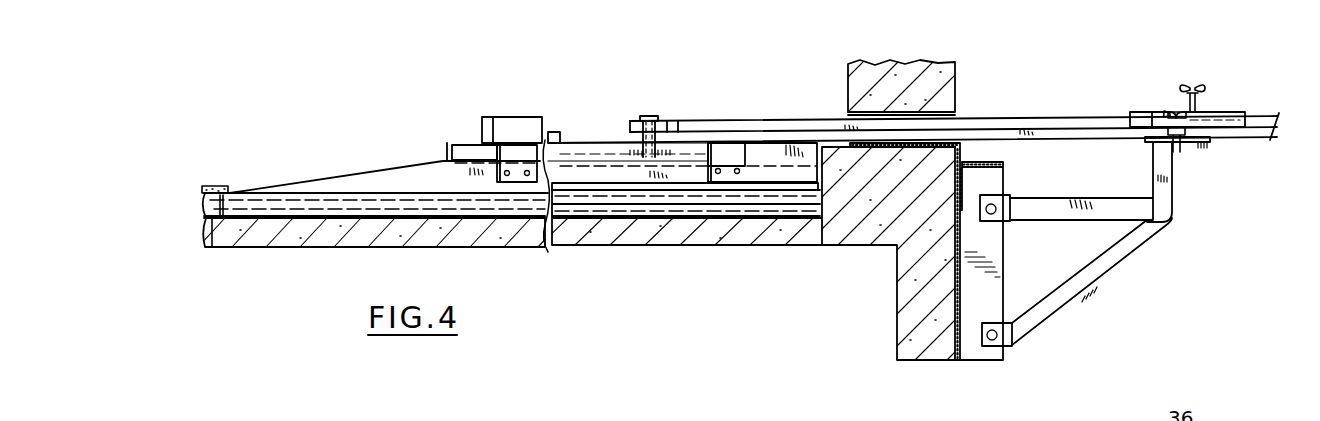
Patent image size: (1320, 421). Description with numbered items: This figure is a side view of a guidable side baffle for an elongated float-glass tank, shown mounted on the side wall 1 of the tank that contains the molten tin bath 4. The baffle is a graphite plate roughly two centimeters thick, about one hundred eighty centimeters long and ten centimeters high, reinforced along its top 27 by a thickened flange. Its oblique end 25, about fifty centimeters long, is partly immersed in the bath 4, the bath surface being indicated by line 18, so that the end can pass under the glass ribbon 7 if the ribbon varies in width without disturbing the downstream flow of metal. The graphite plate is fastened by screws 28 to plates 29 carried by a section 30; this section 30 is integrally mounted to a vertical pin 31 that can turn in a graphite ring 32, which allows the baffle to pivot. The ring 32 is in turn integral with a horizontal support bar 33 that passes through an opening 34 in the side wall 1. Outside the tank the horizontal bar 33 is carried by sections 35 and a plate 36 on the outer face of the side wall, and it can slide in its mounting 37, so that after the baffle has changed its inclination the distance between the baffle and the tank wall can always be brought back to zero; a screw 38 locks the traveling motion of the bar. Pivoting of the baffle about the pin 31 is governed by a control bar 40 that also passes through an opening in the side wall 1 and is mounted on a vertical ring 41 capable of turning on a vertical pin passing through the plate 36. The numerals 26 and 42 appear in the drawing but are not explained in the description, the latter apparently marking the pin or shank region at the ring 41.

The side wall 1 is at (902, 78).
The molten tin bath 4 is at (637, 208).
The glass ribbon 7 is at (216, 186).
The bath level line 18 is at (237, 190).
The oblique end 25 is at (373, 162).
The end piece 26 is at (217, 222).
The top 27 is at (625, 186).
The screws 28 is at (508, 176).
The plates 29 is at (511, 150).
The section 30 is at (447, 150).
The vertical pin 31 is at (649, 116).
The graphite ring 32 is at (631, 123).
The horizontal support bar 33 is at (770, 122).
The opening 34 is at (955, 118).
The sections 35 is at (1150, 230).
The plate 36 is at (1210, 141).
The mounting 37 is at (1145, 122).
The screw 38 is at (1205, 88).
The control bar 40 is at (1067, 136).
The vertical ring 41 is at (1162, 115).
The bolt shank 42 is at (1184, 157).